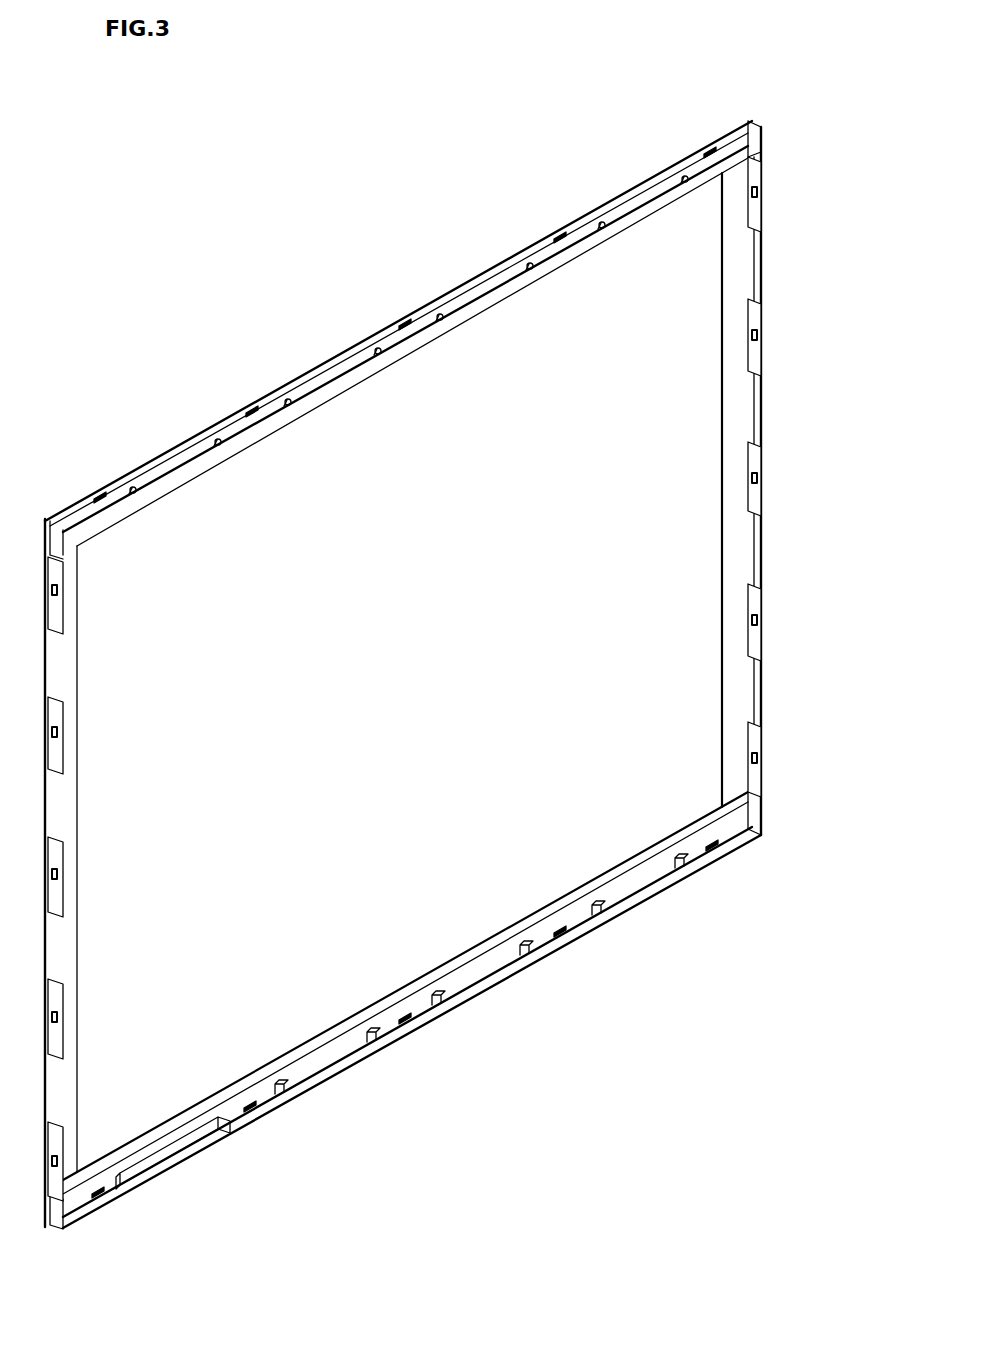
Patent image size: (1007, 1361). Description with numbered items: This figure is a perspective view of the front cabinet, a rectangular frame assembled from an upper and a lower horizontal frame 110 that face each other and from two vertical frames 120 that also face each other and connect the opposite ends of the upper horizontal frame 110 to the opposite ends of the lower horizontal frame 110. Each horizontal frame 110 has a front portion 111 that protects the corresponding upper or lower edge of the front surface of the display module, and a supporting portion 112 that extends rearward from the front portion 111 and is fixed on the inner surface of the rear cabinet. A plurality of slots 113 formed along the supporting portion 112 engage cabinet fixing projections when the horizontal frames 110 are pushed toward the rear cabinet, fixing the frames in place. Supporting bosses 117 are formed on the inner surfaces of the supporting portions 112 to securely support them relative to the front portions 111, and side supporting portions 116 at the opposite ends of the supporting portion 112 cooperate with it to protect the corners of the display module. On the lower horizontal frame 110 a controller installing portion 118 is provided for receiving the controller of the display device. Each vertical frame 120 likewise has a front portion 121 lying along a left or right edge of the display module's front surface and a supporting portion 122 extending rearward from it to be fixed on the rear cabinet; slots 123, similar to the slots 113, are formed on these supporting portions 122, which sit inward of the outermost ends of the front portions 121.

The horizontal frame 110 is at (424, 663).
The front portion 111 is at (583, 243).
The supporting portion 112 is at (590, 213).
The slot 113 is at (712, 150).
The side supporting portion 116 is at (764, 148).
The supporting boss 117 is at (441, 325).
The controller installing portion 118 is at (180, 1148).
The vertical frame 120 is at (471, 675).
The front portion 121 is at (750, 272).
The supporting portion 122 is at (760, 214).
The slot 123 is at (760, 191).